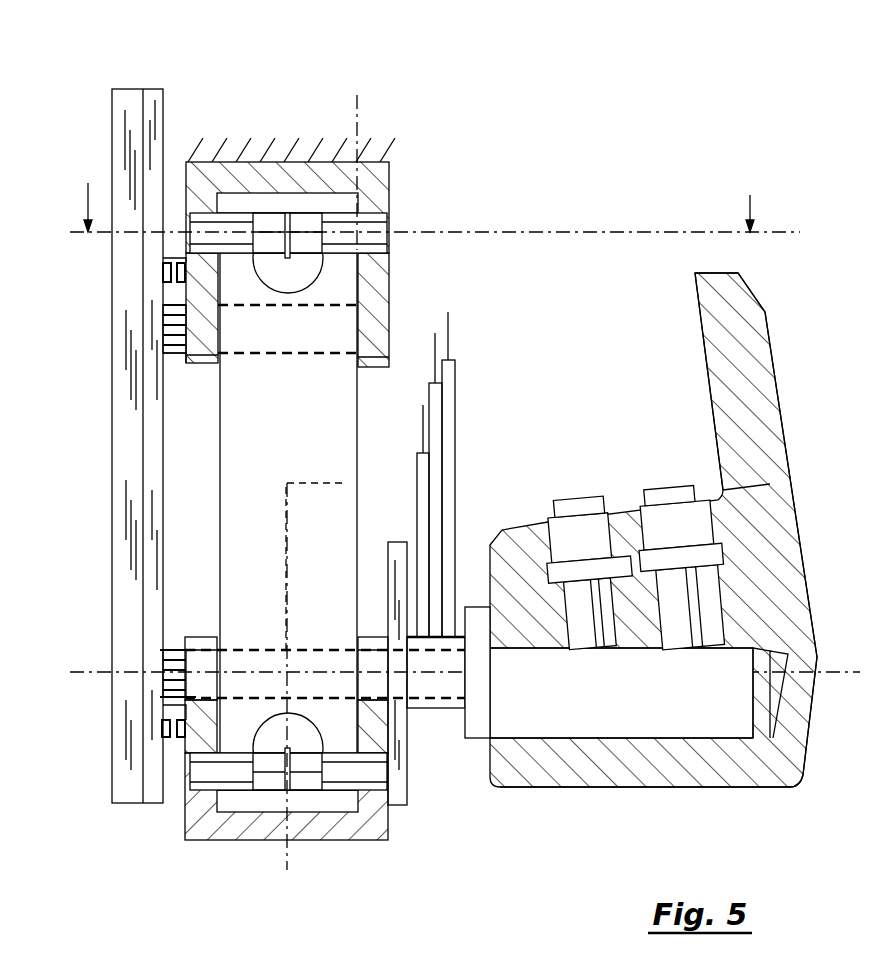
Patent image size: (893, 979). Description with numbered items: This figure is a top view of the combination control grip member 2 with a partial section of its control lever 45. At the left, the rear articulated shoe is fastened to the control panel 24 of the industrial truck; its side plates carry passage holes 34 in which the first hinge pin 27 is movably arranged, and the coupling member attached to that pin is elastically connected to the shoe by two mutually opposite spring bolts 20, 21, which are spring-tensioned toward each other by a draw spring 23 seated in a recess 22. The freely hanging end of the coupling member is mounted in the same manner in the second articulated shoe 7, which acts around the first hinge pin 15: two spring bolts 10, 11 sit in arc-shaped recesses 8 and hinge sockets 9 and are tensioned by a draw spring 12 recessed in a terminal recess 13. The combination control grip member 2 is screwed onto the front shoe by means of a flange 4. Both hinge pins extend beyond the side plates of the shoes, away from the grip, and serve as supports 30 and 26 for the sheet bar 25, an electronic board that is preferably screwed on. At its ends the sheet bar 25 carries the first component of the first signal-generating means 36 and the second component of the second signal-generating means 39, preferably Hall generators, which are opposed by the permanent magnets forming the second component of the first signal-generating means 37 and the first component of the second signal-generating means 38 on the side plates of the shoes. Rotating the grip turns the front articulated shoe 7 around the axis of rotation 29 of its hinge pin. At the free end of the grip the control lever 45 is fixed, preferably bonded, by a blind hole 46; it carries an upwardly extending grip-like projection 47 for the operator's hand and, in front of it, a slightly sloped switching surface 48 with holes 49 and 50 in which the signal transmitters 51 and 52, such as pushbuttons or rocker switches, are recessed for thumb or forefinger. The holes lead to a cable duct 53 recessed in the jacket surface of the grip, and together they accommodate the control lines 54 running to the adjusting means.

The combination control grip member 2 is at (655, 712).
The flange 4 is at (368, 108).
The second articulated shoe 7 is at (388, 822).
The arc-shaped recesses 8 is at (185, 778).
The hinge sockets 9 is at (233, 787).
The spring bolt 10 is at (397, 808).
The spring bolt 11 is at (436, 672).
The draw spring 12 is at (287, 770).
The terminal recess 13 is at (352, 773).
The first hinge pin 15 is at (262, 655).
The spring bolt 20 is at (283, 145).
The spring bolt 21 is at (215, 215).
The recess 22 is at (267, 263).
The draw spring 23 is at (291, 240).
The control panel 24 is at (353, 225).
The sheet bar 25 is at (157, 490).
The support 26 is at (167, 322).
The first hinge pin 27 is at (220, 403).
The axis of rotation 29 is at (100, 672).
The support 30 is at (178, 650).
The passage holes 34 is at (180, 357).
The first component of the first signal-generating means 36 is at (165, 268).
The second component of the first signal-generating means 37 is at (180, 265).
The first component of the second signal-generating means 38 is at (165, 720).
The second component of the second signal-generating means 39 is at (165, 735).
The control lever 45 is at (607, 790).
The blind hole 46 is at (753, 755).
The grip-like projection 47 is at (757, 348).
The switching surface 48 is at (670, 511).
The hole 49 is at (608, 560).
The hole 50 is at (776, 585).
The signal transmitter 51 is at (588, 540).
The signal transmitter 52 is at (693, 540).
The cable duct 53 is at (708, 660).
The control lines 54 is at (455, 365).